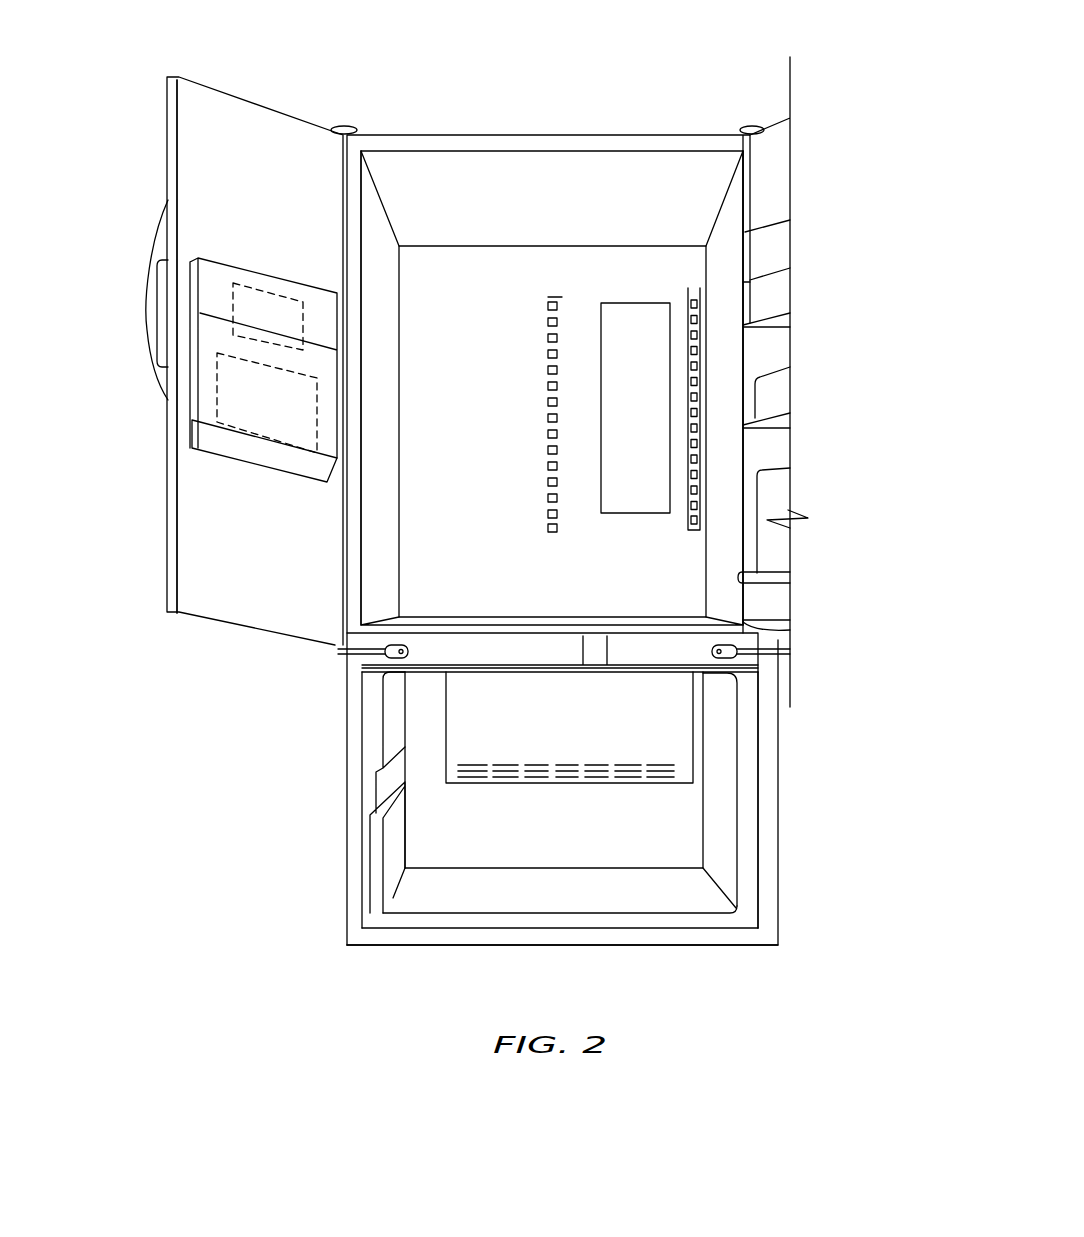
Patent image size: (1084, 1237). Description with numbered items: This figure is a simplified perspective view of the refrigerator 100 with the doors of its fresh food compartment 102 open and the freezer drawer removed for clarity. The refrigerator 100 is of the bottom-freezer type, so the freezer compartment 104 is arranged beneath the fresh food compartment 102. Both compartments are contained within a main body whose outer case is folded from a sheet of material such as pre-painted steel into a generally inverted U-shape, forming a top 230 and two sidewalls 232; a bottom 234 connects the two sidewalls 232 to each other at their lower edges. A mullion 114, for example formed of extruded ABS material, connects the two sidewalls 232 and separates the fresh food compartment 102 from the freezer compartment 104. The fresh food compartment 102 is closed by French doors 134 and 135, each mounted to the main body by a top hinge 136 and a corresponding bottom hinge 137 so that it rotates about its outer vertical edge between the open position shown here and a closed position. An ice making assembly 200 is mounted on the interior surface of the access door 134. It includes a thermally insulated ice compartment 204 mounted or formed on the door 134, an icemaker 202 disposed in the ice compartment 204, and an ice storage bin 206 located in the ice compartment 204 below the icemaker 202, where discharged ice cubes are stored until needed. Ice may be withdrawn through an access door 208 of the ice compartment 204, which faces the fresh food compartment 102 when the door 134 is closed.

The refrigerator 100 is at (627, 78).
The fresh food compartment 102 is at (692, 265).
The freezer compartment 104 is at (642, 838).
The mullion 114 is at (650, 652).
The French door 134 is at (203, 118).
The French door 135 is at (765, 303).
The top hinge 136 is at (341, 120).
The bottom hinge 137 is at (338, 650).
The ice making assembly 200 is at (243, 370).
The icemaker 202 is at (287, 293).
The ice compartment 204 is at (172, 404).
The ice storage bin 206 is at (282, 413).
The access door 208 is at (318, 288).
The top 230 is at (510, 135).
The sidewalls 232 is at (405, 398).
The bottom 234 is at (657, 945).